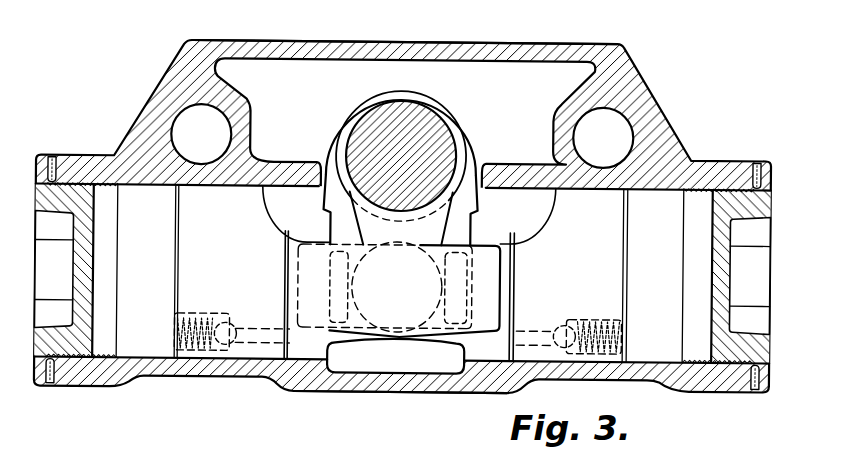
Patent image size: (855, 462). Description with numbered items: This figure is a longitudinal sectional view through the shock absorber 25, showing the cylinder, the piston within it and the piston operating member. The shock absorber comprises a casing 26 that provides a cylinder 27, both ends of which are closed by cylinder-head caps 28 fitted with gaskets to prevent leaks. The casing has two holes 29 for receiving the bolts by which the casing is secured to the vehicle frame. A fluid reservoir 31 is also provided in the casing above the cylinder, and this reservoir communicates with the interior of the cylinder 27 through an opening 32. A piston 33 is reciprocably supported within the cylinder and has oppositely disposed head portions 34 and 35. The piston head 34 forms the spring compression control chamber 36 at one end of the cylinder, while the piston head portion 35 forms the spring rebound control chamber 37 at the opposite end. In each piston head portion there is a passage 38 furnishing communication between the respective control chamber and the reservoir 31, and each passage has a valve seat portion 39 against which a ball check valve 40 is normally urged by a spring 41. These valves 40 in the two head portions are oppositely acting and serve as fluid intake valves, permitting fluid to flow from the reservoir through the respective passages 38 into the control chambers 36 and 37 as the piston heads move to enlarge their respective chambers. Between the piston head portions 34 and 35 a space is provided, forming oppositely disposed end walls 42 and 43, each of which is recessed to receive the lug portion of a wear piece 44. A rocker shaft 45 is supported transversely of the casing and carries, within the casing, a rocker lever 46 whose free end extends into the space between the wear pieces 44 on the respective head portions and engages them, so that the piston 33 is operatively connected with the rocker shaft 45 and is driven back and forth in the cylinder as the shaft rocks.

The shock absorber 25 is at (592, 31).
The casing 26 is at (385, 48).
The cylinder 27 is at (290, 385).
The cylinder-head cap 28 is at (43, 167).
The hole 29 is at (193, 118).
The fluid reservoir 31 is at (543, 70).
The opening 32 is at (322, 173).
The piston 33 is at (477, 258).
The piston head portion 34 is at (186, 210).
The piston head portion 35 is at (602, 208).
The spring compression control chamber 36 is at (143, 343).
The spring rebound control chamber 37 is at (660, 343).
The passage 38 is at (192, 314).
The valve seat portion 39 is at (238, 327).
The ball check valve 40 is at (224, 323).
The spring 41 is at (177, 329).
The end wall 42 is at (343, 306).
The end wall 43 is at (456, 302).
The wear piece 44 is at (440, 268).
The rocker shaft 45 is at (427, 125).
The rocker lever 46 is at (378, 229).